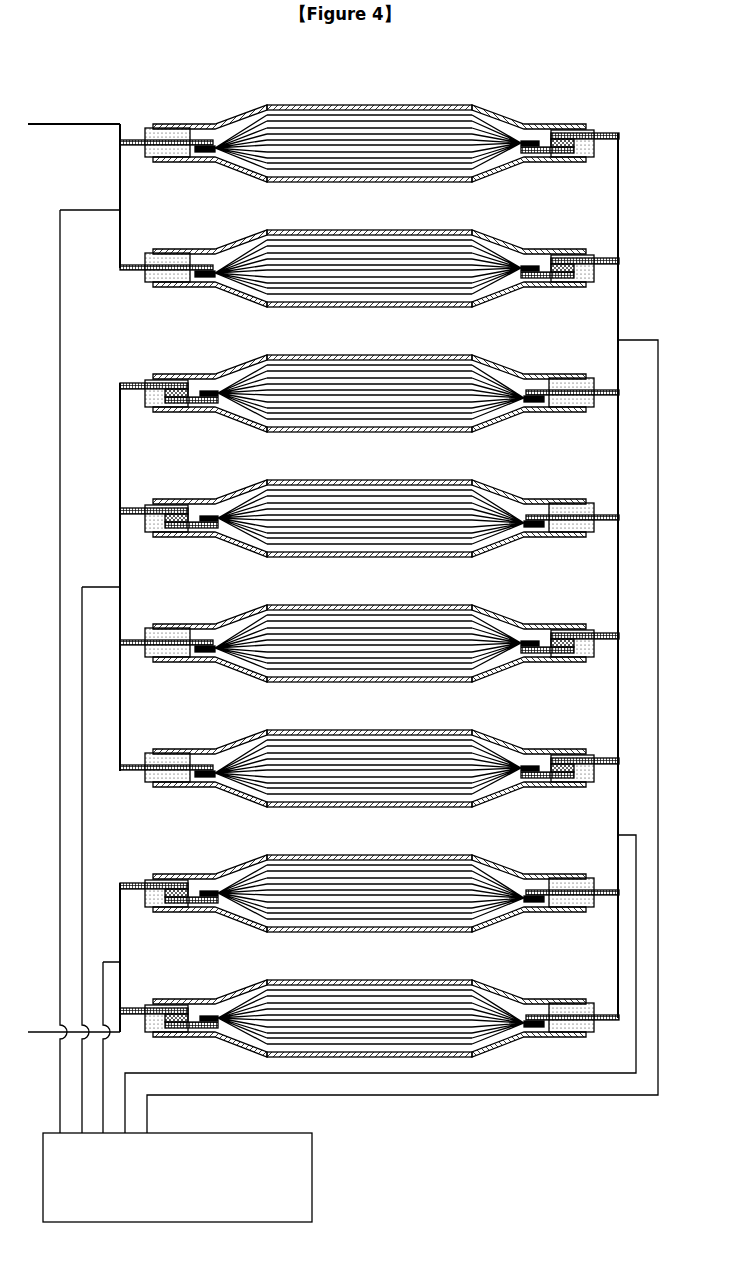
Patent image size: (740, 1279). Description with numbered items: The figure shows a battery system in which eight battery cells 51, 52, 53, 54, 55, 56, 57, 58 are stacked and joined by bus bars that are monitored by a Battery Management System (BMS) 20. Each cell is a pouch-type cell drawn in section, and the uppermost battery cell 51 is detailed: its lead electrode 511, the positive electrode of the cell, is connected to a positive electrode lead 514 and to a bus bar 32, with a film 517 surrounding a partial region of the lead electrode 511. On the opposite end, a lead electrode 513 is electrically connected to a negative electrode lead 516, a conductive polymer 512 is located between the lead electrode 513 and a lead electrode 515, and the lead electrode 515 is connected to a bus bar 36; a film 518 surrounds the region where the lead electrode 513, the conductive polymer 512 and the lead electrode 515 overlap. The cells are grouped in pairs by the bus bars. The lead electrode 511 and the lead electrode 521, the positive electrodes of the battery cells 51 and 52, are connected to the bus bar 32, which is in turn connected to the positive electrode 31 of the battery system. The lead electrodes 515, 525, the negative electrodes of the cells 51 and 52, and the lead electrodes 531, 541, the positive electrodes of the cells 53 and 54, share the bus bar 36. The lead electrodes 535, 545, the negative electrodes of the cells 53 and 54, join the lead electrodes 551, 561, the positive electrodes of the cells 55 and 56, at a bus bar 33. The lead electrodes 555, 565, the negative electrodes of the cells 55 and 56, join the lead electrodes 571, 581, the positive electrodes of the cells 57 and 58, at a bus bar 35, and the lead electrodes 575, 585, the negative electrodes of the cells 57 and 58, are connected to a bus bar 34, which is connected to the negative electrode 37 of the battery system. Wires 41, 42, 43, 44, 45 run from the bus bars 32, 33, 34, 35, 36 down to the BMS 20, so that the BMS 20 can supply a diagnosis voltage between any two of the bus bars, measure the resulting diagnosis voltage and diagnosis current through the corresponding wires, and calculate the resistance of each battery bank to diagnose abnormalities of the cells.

The Battery Management System (BMS) 20 is at (313, 1179).
The positive electrode 31 is at (68, 122).
The bus bar 32 is at (118, 241).
The bus bar 33 is at (122, 459).
The bus bar 34 is at (122, 934).
The bus bar 35 is at (616, 934).
The bus bar 36 is at (621, 198).
The negative electrode 37 is at (37, 1031).
The wire 41 is at (80, 209).
The wire 42 is at (87, 586).
The wire 43 is at (101, 961).
The wire 44 is at (635, 834).
The wire 45 is at (643, 339).
The battery cell 51 is at (382, 133).
The battery cell 52 is at (369, 252).
The battery cell 53 is at (369, 371).
The battery cell 54 is at (369, 499).
The battery cell 55 is at (369, 621).
The battery cell 56 is at (369, 752).
The battery cell 57 is at (369, 871).
The battery cell 58 is at (369, 1000).
The lead electrode 511 is at (131, 139).
The conductive polymer 512 is at (562, 138).
The lead electrode 513 is at (533, 152).
The positive electrode lead 514 is at (203, 153).
The lead electrode 515 is at (620, 133).
The negative electrode lead 516 is at (531, 140).
The film 517 is at (163, 158).
The film 518 is at (586, 158).
The lead electrode 521 is at (133, 275).
The lead electrode 525 is at (606, 262).
The lead electrode 531 is at (608, 390).
The lead electrode 535 is at (133, 383).
The lead electrode 541 is at (608, 515).
The lead electrode 545 is at (133, 520).
The lead electrode 551 is at (132, 639).
The lead electrode 555 is at (608, 636).
The lead electrode 561 is at (133, 775).
The lead electrode 565 is at (608, 761).
The lead electrode 571 is at (608, 890).
The lead electrode 575 is at (133, 883).
The lead electrode 581 is at (608, 1015).
The lead electrode 585 is at (133, 1023).